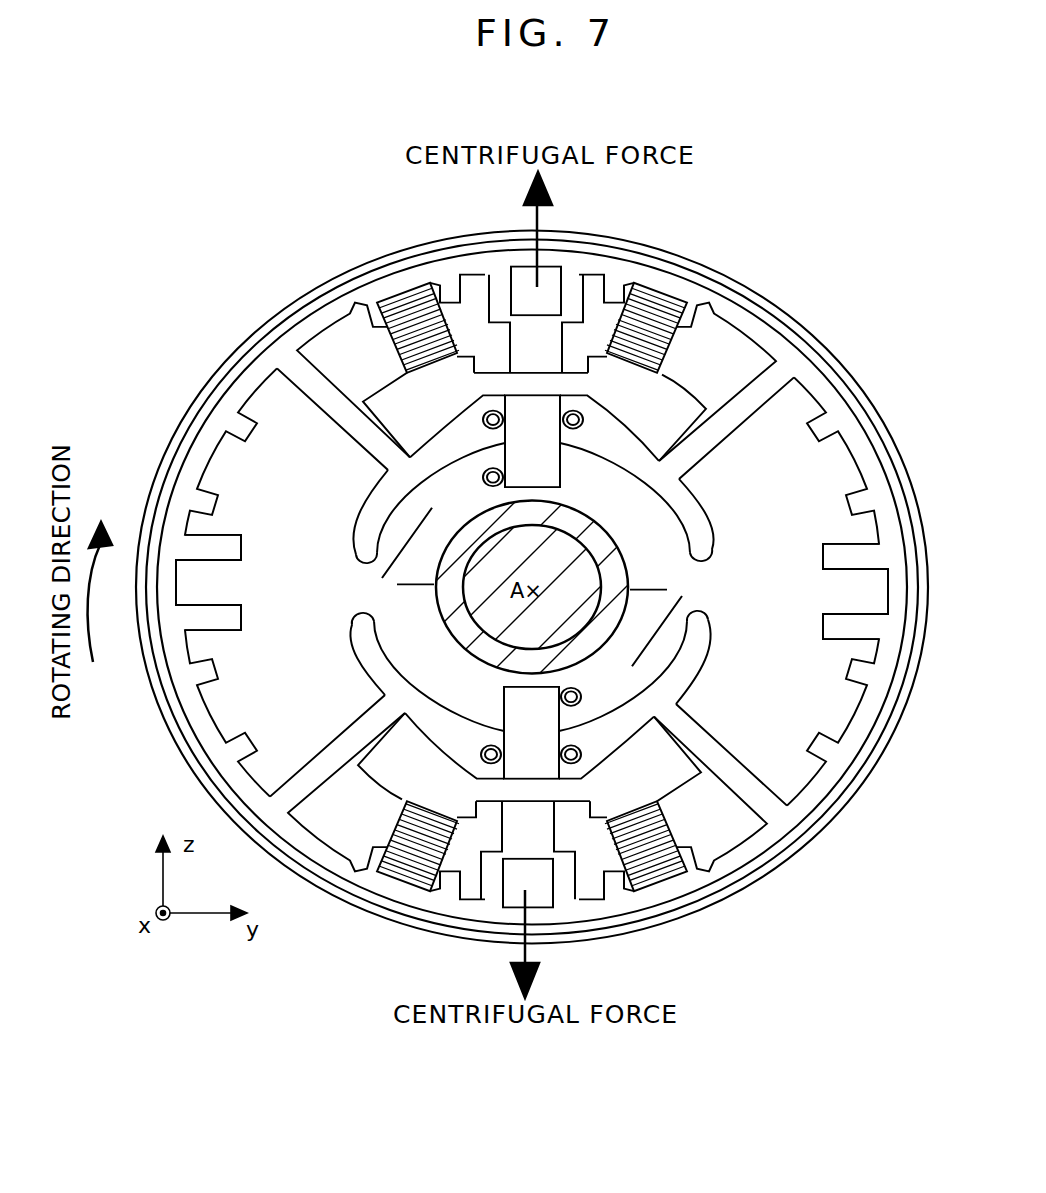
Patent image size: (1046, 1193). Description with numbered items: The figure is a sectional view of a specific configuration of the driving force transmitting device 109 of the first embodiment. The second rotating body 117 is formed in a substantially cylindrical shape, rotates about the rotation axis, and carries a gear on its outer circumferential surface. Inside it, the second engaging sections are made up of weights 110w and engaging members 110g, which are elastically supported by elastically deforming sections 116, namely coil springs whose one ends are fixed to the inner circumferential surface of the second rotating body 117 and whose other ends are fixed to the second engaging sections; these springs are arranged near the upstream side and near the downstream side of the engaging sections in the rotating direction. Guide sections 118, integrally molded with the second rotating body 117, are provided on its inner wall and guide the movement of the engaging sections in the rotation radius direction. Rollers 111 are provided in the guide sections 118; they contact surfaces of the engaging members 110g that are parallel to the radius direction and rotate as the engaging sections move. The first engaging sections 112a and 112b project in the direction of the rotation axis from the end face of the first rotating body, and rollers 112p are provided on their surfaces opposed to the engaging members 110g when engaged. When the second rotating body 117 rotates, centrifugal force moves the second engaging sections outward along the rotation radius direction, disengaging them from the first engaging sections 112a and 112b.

The driving force transmitting device 109 is at (222, 298).
The engaging member 110g is at (550, 325).
The weight 110w is at (663, 400).
The roller 111 is at (488, 472).
The first engaging section 112a is at (393, 590).
The first engaging section 112b is at (660, 580).
The roller 112p is at (470, 470).
The elastically deforming section 116 is at (393, 300).
The second rotating body 117 is at (727, 420).
The guide section 118 is at (513, 460).